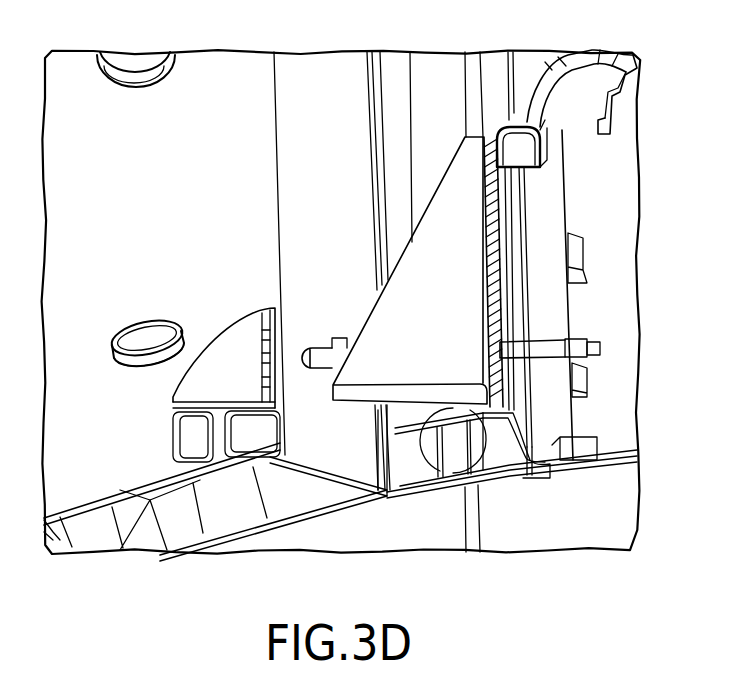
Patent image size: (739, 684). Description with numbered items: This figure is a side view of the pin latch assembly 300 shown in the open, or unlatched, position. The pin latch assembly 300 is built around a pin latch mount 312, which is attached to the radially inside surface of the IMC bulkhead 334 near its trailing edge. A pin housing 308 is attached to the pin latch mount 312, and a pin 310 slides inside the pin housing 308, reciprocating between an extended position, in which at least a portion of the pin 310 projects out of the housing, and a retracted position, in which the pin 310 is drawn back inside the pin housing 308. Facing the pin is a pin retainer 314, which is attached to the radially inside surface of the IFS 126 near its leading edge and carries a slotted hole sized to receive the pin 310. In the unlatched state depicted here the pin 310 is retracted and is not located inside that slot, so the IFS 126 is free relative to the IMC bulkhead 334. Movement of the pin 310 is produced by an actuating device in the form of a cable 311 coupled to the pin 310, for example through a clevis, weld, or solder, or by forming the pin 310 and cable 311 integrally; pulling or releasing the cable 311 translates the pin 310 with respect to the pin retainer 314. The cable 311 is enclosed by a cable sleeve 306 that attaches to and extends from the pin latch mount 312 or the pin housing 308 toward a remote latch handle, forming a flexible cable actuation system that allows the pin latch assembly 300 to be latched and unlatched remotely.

The pin latch assembly 300 is at (345, 176).
The IFS 126 is at (87, 497).
The cable sleeve 306 is at (547, 338).
The pin housing 308 is at (342, 338).
The pin 310 is at (317, 367).
The cable 311 is at (597, 362).
The pin latch mount 312 is at (459, 296).
The pin retainer 314 is at (239, 401).
The IMC bulkhead 334 is at (503, 227).